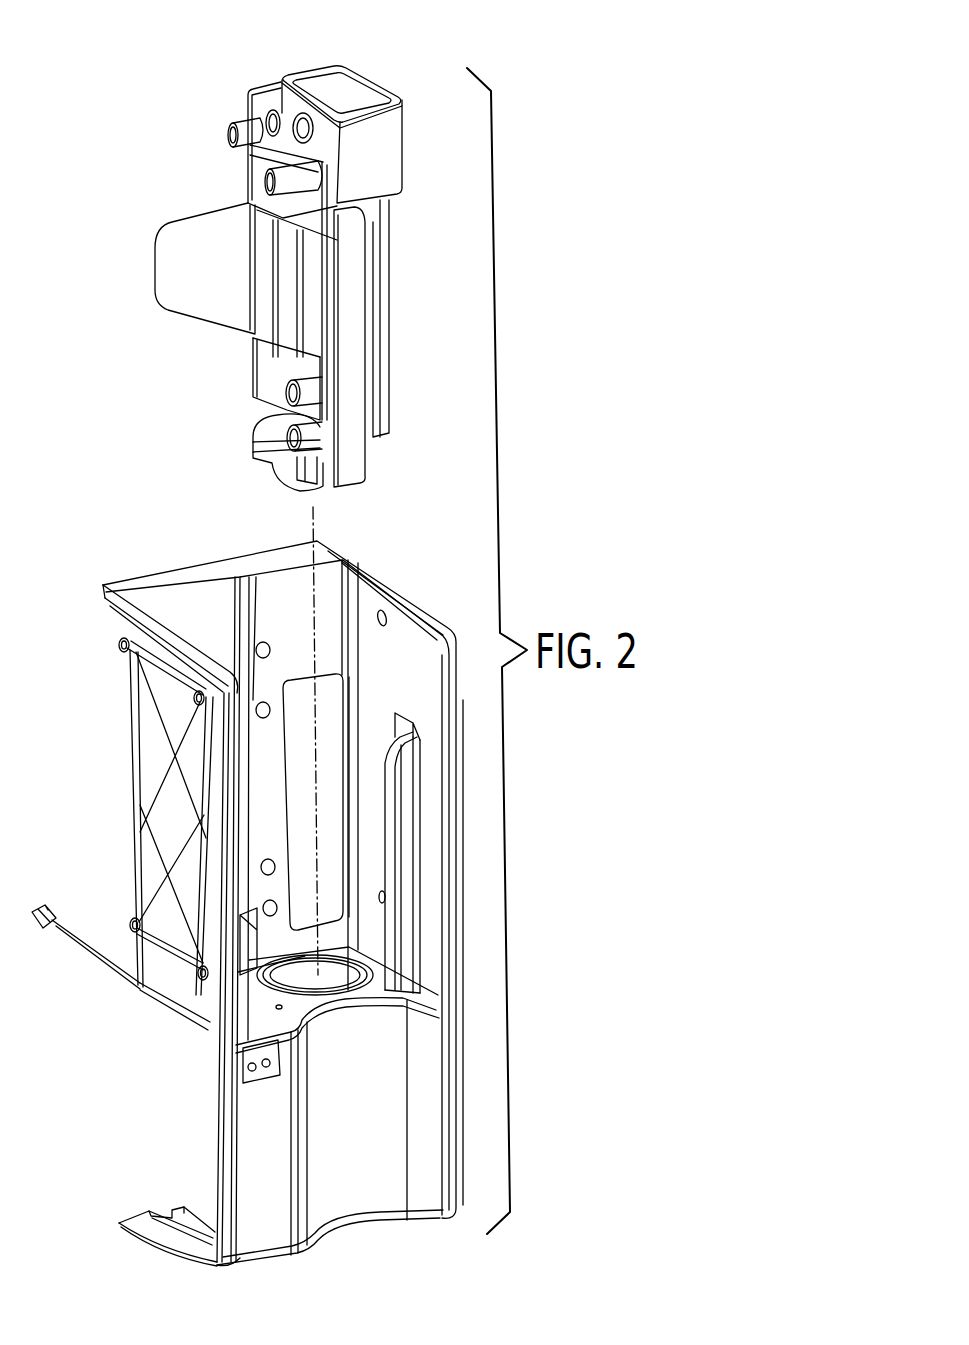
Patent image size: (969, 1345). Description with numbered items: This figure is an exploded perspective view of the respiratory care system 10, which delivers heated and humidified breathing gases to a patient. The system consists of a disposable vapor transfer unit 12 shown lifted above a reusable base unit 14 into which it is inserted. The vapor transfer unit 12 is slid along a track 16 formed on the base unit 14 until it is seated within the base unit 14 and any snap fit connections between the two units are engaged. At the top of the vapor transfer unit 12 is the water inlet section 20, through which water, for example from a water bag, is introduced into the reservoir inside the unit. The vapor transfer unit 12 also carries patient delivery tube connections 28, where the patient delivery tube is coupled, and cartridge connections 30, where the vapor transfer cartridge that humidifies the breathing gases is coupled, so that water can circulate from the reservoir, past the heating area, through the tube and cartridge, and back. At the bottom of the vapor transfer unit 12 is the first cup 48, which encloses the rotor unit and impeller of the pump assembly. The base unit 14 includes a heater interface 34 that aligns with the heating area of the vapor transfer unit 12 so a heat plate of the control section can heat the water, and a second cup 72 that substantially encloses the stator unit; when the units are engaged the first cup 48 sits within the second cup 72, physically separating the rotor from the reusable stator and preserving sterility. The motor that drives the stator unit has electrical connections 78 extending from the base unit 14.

The respiratory care system 10 is at (165, 83).
The vapor transfer unit 12 is at (397, 148).
The base unit 14 is at (398, 642).
The track 16 is at (408, 763).
The water inlet section 20 is at (335, 92).
The patient delivery tube connections 28 is at (352, 492).
The cartridge connections 30 is at (258, 182).
The heater interface 34 is at (323, 846).
The first cup 48 is at (285, 485).
The second cup 72 is at (337, 983).
The electrical connections 78 is at (97, 958).